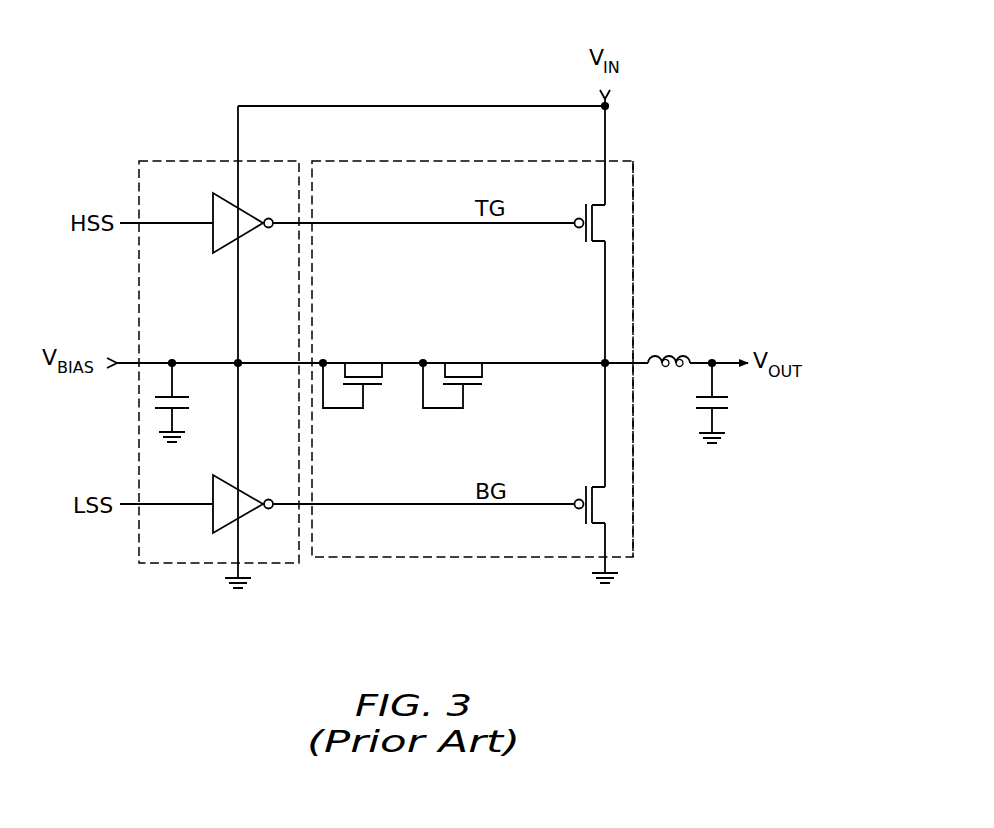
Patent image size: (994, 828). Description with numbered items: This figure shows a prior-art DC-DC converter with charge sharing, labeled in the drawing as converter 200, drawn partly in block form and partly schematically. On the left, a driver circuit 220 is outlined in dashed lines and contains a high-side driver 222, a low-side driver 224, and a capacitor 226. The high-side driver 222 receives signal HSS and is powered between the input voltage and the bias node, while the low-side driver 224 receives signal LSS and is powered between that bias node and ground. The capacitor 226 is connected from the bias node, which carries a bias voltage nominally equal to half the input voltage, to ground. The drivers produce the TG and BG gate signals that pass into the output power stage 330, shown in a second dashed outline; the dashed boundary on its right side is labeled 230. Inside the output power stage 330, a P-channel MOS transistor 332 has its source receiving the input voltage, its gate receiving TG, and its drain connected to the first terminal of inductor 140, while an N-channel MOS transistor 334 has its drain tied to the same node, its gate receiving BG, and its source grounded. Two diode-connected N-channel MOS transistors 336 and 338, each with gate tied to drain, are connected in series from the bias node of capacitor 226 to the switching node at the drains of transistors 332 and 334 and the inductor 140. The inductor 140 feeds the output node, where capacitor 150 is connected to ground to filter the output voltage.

The prior art power converter 200 is at (115, 50).
The driver circuit 220 is at (200, 161).
The high-side driver 222 is at (213, 235).
The low-side driver 224 is at (213, 522).
The capacitor 226 is at (183, 398).
The power stage 230 is at (633, 222).
The output power stage 330 is at (425, 161).
The P-channel MOS transistor 332 is at (591, 243).
The N-channel MOS transistor 334 is at (591, 525).
The diode-connected N-channel MOS transistor 336 is at (358, 368).
The diode-connected N-channel MOS transistor 338 is at (457, 368).
The inductor 140 is at (673, 352).
The capacitor 150 is at (727, 408).